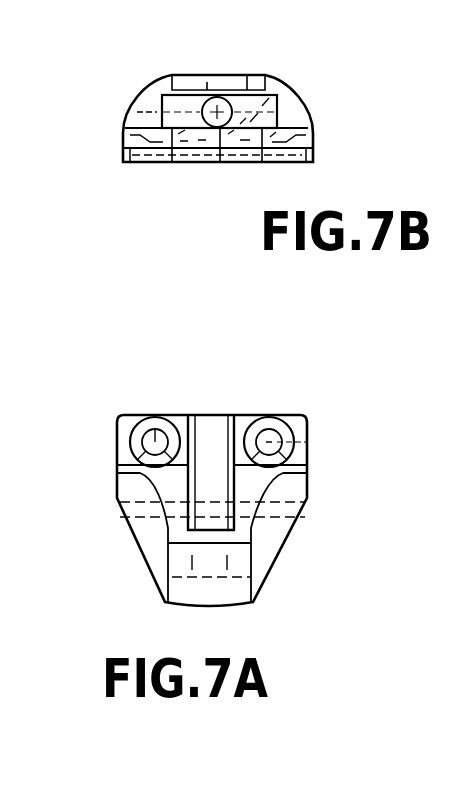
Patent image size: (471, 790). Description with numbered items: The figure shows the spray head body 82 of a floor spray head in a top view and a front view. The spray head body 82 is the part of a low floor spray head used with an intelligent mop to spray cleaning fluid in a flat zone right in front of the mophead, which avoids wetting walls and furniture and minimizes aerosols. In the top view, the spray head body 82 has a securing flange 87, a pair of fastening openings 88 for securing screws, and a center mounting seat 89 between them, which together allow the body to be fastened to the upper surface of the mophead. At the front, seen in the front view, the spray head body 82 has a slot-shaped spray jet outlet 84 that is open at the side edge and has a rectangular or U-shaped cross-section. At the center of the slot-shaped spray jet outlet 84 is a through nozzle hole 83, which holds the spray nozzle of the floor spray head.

In FIG. 7B, the spray head body 82 is at (282, 58).
In FIG. 7A, the spray head body 82 is at (318, 438).
In FIG. 7B, the through nozzle hole 83 is at (223, 152).
In FIG. 7A, the through nozzle hole 83 is at (208, 559).
In FIG. 7B, the slot-shaped spray jet outlet 84 is at (277, 96).
In FIG. 7A, the securing flange 87 is at (128, 424).
In FIG. 7A, the fastening openings 88 is at (270, 433).
In FIG. 7A, the center mounting seat 89 is at (215, 432).